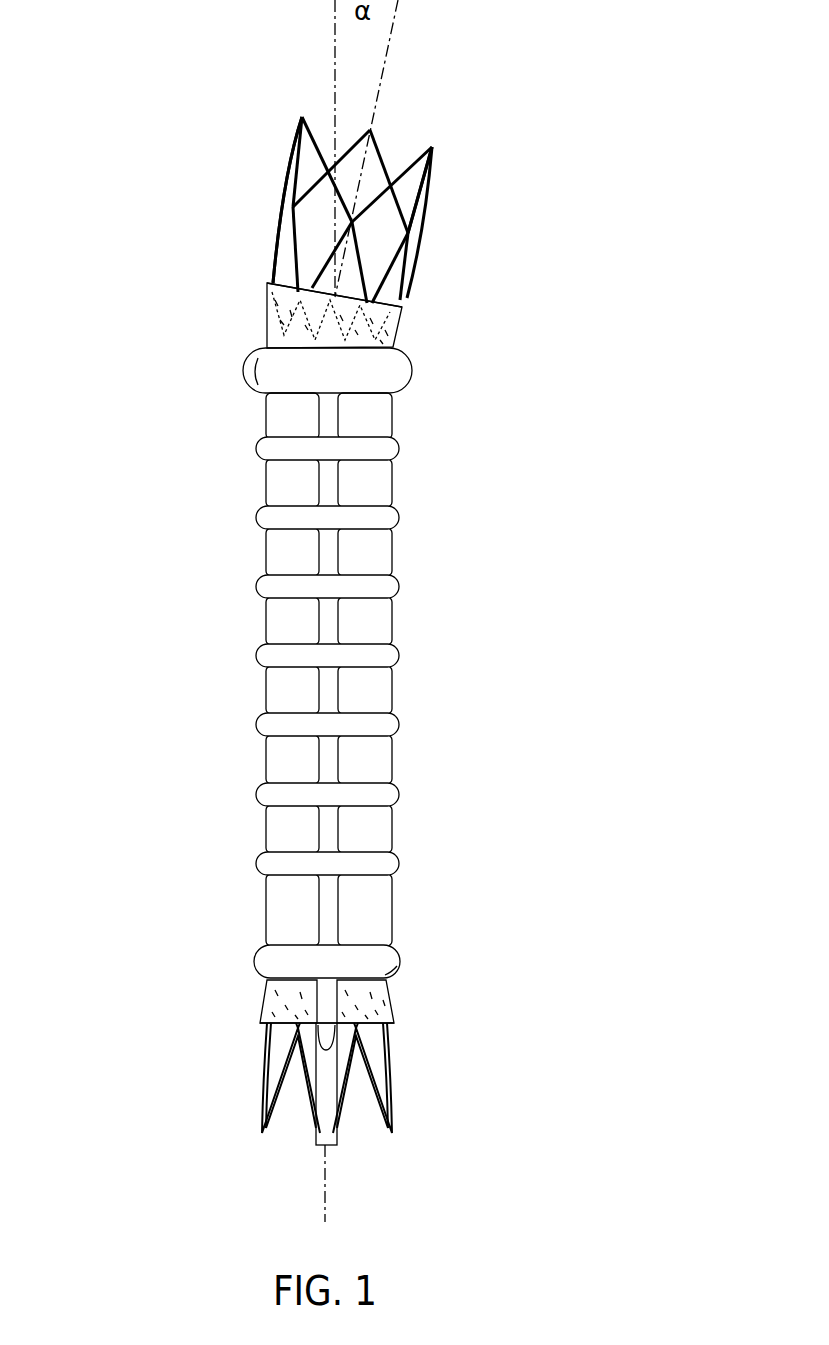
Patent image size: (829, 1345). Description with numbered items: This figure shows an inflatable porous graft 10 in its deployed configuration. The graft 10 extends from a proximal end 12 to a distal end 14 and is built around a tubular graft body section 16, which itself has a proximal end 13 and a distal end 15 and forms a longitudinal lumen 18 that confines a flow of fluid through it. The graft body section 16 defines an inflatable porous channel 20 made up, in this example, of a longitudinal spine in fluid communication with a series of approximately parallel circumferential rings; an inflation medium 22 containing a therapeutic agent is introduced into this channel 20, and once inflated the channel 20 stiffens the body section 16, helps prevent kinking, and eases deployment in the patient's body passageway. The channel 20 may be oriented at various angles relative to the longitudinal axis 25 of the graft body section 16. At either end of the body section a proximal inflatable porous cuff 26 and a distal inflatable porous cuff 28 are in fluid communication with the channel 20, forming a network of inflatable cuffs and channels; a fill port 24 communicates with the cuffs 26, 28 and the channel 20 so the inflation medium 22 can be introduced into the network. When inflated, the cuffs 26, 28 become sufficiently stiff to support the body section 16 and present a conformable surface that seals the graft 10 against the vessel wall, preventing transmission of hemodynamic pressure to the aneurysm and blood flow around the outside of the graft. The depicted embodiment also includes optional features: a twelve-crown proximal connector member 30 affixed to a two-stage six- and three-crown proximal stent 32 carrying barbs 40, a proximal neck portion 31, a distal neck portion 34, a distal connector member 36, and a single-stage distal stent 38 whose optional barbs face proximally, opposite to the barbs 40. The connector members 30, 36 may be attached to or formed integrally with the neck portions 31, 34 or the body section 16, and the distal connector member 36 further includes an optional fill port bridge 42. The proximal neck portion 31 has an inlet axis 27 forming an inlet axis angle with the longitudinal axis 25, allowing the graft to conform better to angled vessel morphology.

The graft 10 is at (148, 375).
The proximal end 12 is at (329, 186).
The proximal end 13 is at (430, 369).
The distal end 14 is at (282, 1103).
The distal end 15 is at (412, 963).
The graft body section 16 is at (352, 669).
The longitudinal lumen 18 is at (358, 1157).
The inflatable porous channel 20 is at (392, 448).
The inflation medium 22 is at (275, 653).
The fill port 24 is at (340, 1140).
The longitudinal axis 25 is at (335, 57).
The proximal inflatable porous cuff 26 is at (257, 375).
The inlet axis 27 is at (390, 42).
The distal inflatable porous cuff 28 is at (393, 970).
The proximal connector member 30 is at (310, 330).
The proximal neck portion 31 is at (273, 308).
The proximal stent 32 is at (448, 143).
The distal neck portion 34 is at (267, 993).
The distal connector member 36 is at (392, 1008).
The distal stent 38 is at (233, 1092).
The barbs 40 is at (348, 156).
The fill port bridge 42 is at (343, 1035).